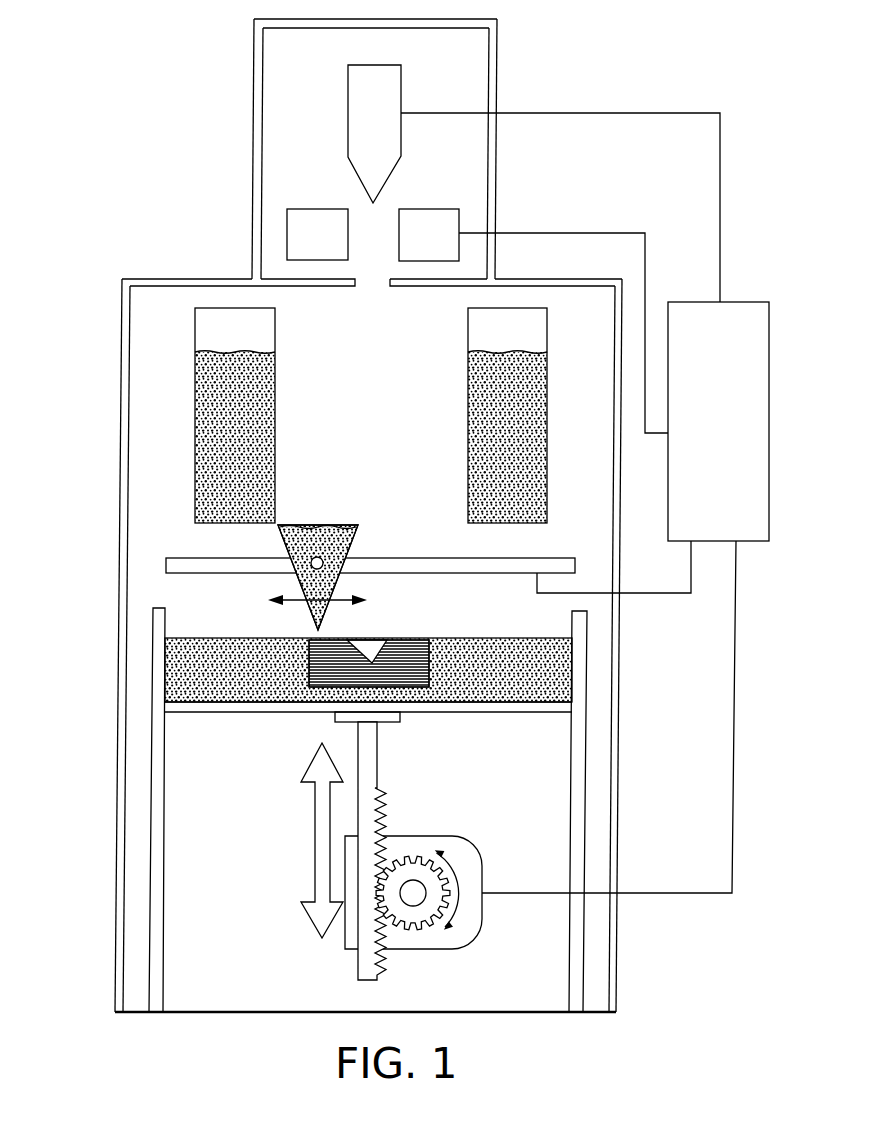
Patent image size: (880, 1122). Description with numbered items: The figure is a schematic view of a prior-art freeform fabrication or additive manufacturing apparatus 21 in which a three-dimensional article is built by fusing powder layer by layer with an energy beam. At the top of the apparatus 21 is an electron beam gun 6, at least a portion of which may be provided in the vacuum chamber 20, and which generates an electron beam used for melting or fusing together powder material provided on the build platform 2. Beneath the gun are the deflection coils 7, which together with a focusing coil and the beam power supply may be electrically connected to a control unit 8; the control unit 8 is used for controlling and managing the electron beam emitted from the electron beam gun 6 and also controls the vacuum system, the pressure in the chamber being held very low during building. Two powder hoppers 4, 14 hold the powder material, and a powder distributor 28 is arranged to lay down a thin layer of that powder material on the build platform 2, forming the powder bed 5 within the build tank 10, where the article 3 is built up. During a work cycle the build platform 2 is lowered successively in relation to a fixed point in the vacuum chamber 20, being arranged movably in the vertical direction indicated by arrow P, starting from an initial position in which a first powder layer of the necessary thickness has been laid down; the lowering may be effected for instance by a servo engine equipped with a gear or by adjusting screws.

The additive manufacturing apparatus 21 is at (199, 40).
The electron beam gun 6 is at (381, 121).
The deflection coil 7 is at (436, 247).
The control unit 8 is at (726, 442).
The vacuum chamber 20 is at (620, 758).
The build tank 10 is at (155, 857).
The powder hopper 4 is at (276, 418).
The powder hopper 14 is at (468, 420).
The powder distributor 28 is at (350, 540).
The powder bed 5 is at (487, 658).
The object being built 3 is at (420, 640).
The build platform 2 is at (232, 705).
The arrow P is at (313, 855).